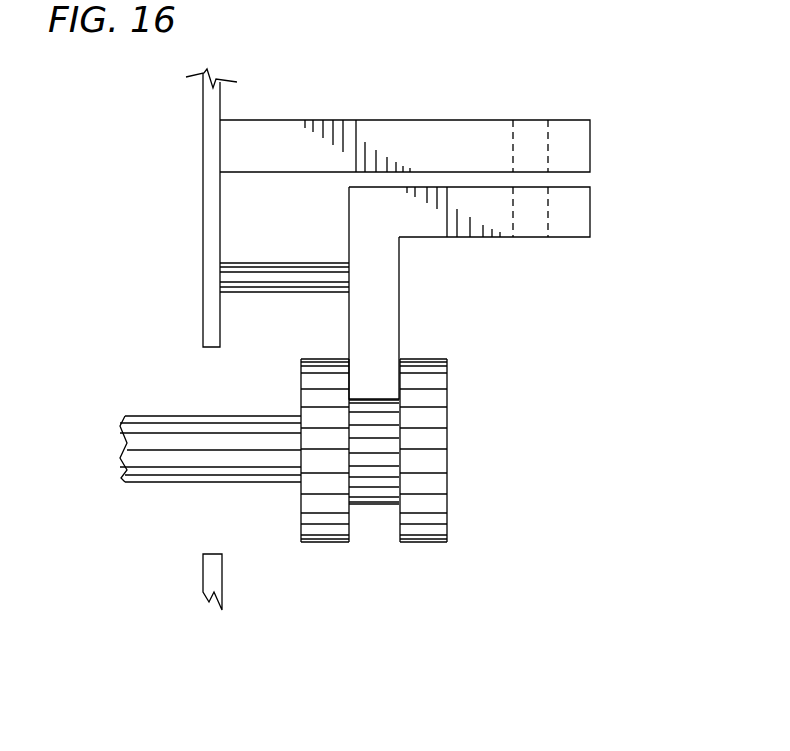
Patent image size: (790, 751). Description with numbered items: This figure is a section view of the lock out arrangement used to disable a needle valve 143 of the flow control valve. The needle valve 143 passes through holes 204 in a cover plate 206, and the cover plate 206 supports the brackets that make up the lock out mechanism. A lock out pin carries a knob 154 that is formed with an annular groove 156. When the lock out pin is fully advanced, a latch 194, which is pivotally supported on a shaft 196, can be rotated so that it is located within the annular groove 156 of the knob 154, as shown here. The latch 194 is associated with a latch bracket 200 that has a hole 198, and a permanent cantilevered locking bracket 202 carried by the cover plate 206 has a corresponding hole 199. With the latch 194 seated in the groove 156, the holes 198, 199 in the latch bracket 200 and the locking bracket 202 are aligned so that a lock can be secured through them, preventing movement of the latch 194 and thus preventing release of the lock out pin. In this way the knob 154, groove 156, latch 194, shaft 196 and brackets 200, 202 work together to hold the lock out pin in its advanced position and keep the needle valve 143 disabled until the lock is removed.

The needle valve 143 is at (166, 440).
The knob 154 is at (325, 545).
The annular groove 156 is at (370, 506).
The latch 194 is at (380, 353).
The shaft 196 is at (280, 283).
The hole 198 is at (548, 216).
The hole 199 is at (548, 140).
The latch bracket 200 is at (573, 218).
The permanent cantilevered locking bracket 202 is at (572, 148).
The holes 204 is at (207, 348).
The cover plate 206 is at (213, 111).